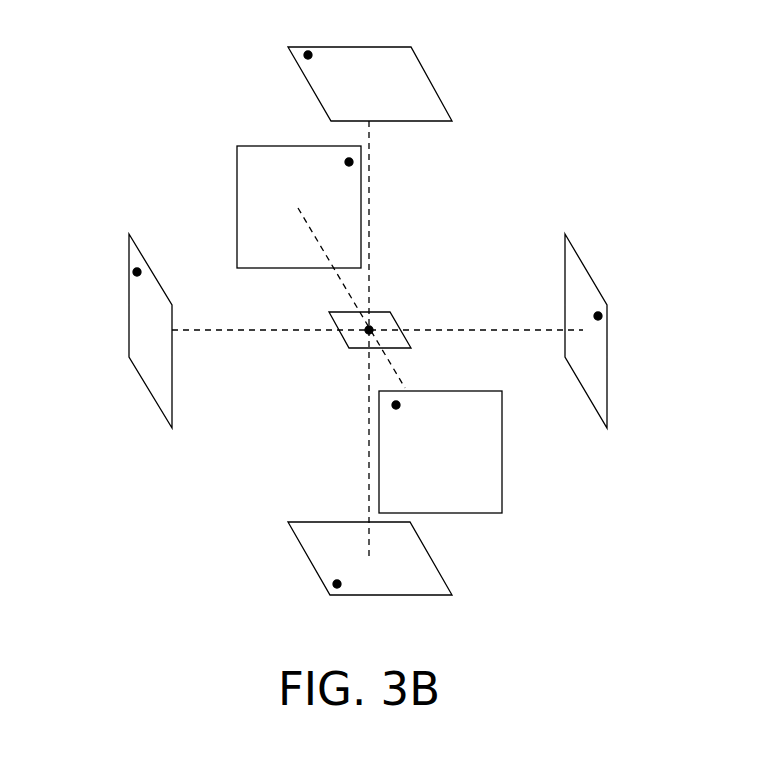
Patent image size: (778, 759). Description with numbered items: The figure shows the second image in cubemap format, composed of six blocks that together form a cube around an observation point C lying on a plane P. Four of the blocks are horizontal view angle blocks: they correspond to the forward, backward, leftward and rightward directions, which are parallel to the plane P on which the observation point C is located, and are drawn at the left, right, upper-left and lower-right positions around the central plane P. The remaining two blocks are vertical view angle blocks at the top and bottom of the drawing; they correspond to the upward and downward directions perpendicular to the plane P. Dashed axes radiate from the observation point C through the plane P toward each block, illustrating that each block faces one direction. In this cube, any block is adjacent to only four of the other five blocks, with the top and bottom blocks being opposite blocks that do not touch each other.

The plane P is at (343, 344).
The observation point C is at (371, 328).